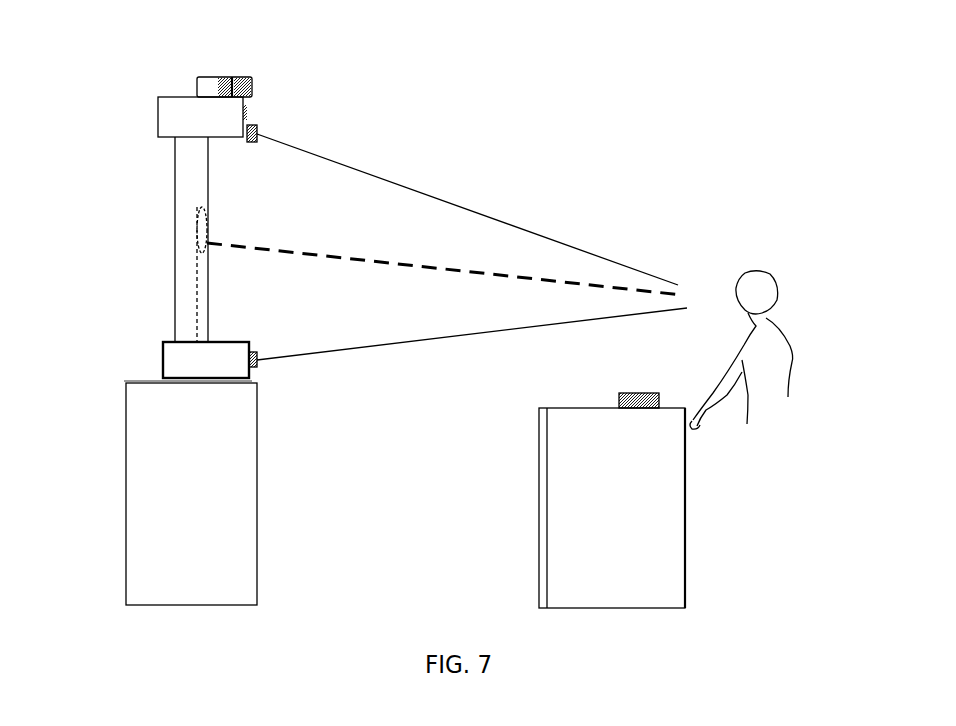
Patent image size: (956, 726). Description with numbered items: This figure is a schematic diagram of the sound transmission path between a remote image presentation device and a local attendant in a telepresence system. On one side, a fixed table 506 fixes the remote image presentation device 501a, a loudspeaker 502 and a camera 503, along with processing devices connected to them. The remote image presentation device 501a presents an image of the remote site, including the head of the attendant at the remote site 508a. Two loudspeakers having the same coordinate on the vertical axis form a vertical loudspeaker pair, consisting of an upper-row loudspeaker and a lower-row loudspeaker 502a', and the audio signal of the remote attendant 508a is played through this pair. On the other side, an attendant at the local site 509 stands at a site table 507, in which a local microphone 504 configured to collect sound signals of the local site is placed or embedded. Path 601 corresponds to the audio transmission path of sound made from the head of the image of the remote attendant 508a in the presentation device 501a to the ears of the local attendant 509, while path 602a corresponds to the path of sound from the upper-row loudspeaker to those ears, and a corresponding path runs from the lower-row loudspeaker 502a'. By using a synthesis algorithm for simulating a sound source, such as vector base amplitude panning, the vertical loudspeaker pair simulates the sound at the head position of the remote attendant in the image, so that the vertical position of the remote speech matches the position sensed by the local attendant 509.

The camera 503 is at (211, 77).
The fixed table 506 is at (168, 118).
The loudspeaker 502 is at (257, 132).
The remote image presentation device 501a is at (197, 171).
The attendant at the remote site 508a is at (197, 245).
The lower-row loudspeaker 502a' is at (260, 374).
The audio transmission path from upper-row loudspeaker 602a is at (428, 197).
The audio transmission path from head image 601 is at (425, 267).
The attendant at the local site 509 is at (746, 273).
The microphone 504 is at (642, 396).
The site table 507 is at (688, 527).